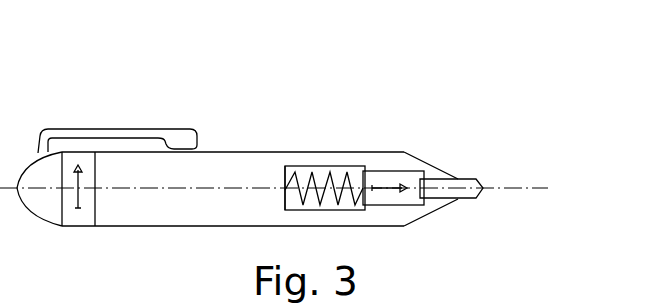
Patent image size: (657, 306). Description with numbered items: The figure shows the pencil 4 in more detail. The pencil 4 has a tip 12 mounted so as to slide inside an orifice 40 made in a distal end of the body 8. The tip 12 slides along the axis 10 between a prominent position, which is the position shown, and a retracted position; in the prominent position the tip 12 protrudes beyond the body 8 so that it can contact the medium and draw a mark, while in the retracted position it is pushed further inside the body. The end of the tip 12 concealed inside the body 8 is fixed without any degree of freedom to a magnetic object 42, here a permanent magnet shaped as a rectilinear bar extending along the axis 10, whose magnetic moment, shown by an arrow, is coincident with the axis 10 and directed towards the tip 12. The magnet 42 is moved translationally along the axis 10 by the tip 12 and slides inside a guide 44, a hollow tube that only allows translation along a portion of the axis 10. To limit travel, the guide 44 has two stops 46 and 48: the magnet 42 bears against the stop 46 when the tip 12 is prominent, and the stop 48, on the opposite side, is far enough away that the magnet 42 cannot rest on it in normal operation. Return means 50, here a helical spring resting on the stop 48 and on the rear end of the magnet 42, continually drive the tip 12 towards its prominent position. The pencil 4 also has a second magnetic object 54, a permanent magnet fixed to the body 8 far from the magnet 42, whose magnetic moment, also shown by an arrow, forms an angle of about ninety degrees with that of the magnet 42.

The pencil 4 is at (22, 75).
The body 8 is at (223, 152).
The axis 10 is at (537, 188).
The tip 12 is at (478, 182).
The orifice 40 is at (455, 200).
The magnetic object 42 is at (402, 177).
The guide 44 is at (322, 166).
The stop 46 is at (428, 172).
The stop 48 is at (285, 177).
The return means 50 is at (340, 185).
The second magnetic object 54 is at (92, 210).